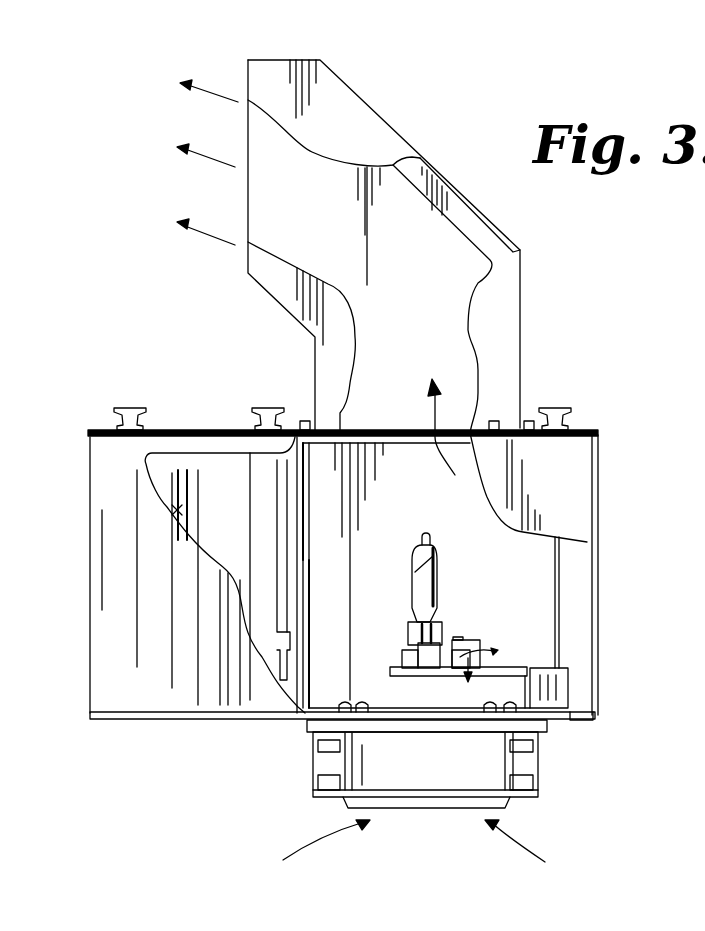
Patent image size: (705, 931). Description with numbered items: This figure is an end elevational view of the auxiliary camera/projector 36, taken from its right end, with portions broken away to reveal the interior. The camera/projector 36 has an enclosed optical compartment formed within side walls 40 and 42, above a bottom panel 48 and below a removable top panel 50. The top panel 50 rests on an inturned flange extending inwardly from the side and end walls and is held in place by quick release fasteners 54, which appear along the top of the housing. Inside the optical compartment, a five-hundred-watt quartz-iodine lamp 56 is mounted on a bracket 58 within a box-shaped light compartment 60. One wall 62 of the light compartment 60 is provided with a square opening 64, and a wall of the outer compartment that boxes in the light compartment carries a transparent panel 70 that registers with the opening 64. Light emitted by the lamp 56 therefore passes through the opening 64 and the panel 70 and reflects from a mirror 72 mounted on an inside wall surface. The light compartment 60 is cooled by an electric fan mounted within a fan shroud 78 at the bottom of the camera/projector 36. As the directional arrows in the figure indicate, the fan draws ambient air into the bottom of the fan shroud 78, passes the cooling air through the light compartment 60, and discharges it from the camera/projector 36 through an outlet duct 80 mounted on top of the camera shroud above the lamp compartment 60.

The auxiliary camera/projector 36 is at (384, 615).
The side wall 40 is at (598, 583).
The side wall 42 is at (117, 677).
The bottom panel 48 is at (253, 718).
The removable top panel 50 is at (175, 430).
The quick release fasteners 54 is at (130, 405).
The quartz-iodine lamp 56 is at (437, 552).
The bracket 58 is at (510, 668).
The light compartment 60 is at (557, 575).
The wall 62 is at (308, 495).
The square opening 64 is at (307, 562).
The transparent panel 70 is at (280, 560).
The mirror 72 is at (177, 507).
The fan shroud 78 is at (422, 778).
The outlet duct 80 is at (510, 297).